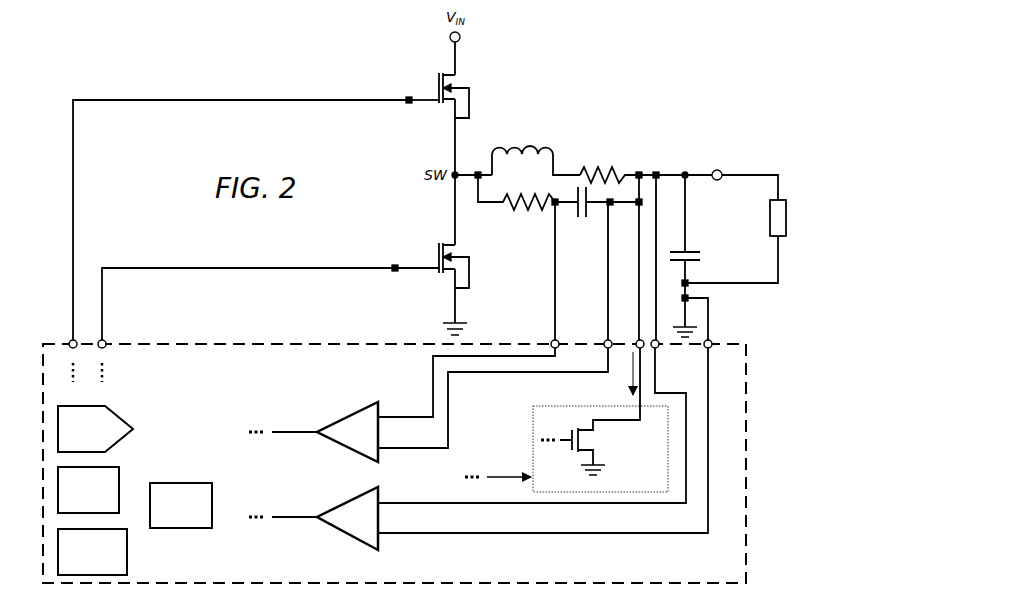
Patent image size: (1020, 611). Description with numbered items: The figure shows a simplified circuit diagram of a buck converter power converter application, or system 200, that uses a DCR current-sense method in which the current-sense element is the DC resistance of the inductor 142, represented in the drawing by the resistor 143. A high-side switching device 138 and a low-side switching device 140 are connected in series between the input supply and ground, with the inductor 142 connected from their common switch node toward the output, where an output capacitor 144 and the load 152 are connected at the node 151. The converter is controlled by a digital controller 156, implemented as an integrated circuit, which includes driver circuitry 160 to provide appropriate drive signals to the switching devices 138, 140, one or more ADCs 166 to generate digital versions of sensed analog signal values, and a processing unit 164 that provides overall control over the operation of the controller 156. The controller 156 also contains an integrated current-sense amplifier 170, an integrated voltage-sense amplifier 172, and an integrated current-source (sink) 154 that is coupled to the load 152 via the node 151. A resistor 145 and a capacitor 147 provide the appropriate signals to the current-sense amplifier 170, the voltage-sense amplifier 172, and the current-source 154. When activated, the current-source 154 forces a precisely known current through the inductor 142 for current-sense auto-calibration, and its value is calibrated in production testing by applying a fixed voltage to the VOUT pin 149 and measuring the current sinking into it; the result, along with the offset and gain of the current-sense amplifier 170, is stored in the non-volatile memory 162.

The system 200 is at (648, 62).
The switching device 138 is at (462, 86).
The switching device 140 is at (465, 258).
The inductor 142 is at (515, 148).
The resistor 143 is at (603, 163).
The output capacitor 144 is at (690, 250).
The resistor 145 is at (509, 201).
The capacitor 147 is at (578, 195).
The VOUT pin 149 is at (637, 341).
The node 151 is at (686, 173).
The load 152 is at (770, 232).
The integrated current-source (sink) 154 is at (566, 420).
The digital controller 156 is at (394, 445).
The driver circuitry 160 is at (184, 483).
The non-volatile memory 162 is at (127, 561).
The processing unit 164 is at (119, 478).
The ADCs 166 is at (118, 418).
The integrated current-sense amplifier 170 is at (355, 411).
The integrated voltage-sense amplifier 172 is at (355, 497).